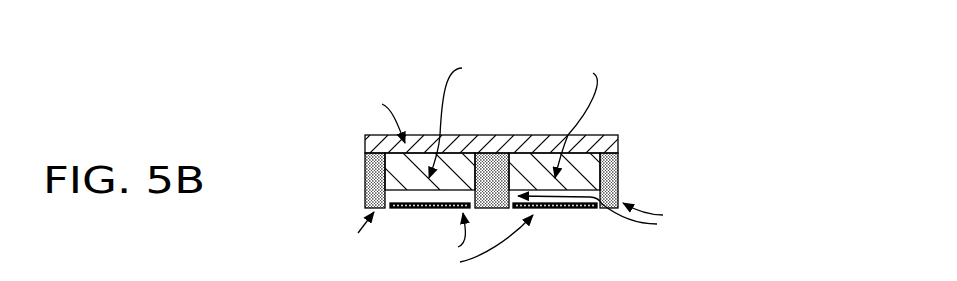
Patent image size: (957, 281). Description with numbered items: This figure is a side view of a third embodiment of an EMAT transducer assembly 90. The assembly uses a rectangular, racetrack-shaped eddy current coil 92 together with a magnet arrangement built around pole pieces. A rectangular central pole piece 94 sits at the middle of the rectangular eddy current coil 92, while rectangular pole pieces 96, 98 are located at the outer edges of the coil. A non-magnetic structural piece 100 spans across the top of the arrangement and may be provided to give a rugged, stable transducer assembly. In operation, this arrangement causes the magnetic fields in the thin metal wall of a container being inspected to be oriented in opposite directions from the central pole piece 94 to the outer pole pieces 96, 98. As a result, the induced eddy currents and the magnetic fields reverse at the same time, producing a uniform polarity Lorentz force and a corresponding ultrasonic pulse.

The EMAT transducer assembly 90 is at (677, 108).
The rectangular eddy current coil 92 is at (437, 209).
The rectangular central pole piece 94 is at (489, 157).
The rectangular pole piece 96 is at (365, 175).
The rectangular pole piece 98 is at (619, 177).
The non-magnetic structural piece 100 is at (366, 141).